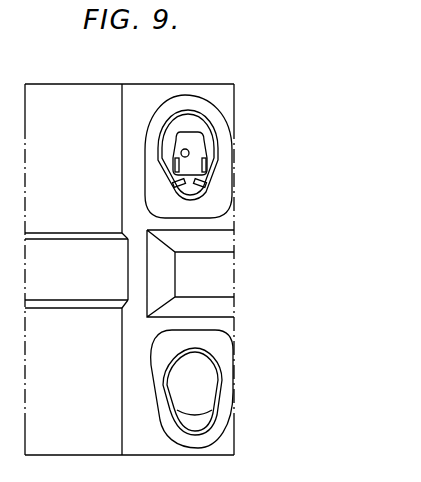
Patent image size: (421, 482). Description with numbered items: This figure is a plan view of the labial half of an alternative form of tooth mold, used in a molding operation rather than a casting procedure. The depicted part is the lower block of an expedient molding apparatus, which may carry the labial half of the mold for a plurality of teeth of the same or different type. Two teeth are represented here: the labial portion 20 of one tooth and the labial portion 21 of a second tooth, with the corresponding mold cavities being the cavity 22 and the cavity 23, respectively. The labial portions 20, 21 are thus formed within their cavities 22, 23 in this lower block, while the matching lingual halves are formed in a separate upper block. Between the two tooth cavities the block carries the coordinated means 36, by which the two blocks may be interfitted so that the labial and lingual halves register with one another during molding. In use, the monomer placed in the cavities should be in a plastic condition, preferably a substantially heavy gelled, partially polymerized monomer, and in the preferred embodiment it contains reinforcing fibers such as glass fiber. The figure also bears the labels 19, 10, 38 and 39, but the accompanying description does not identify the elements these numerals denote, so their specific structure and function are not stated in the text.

The body 19 is at (133, 84).
The labial portion 20 is at (190, 99).
The liner 38 is at (185, 110).
The cavity 22 is at (205, 117).
The key member 10 is at (196, 136).
The slots 39 is at (212, 188).
The coordinated means 36 is at (203, 268).
The cavity 23 is at (197, 368).
The labial portion 21 is at (186, 431).